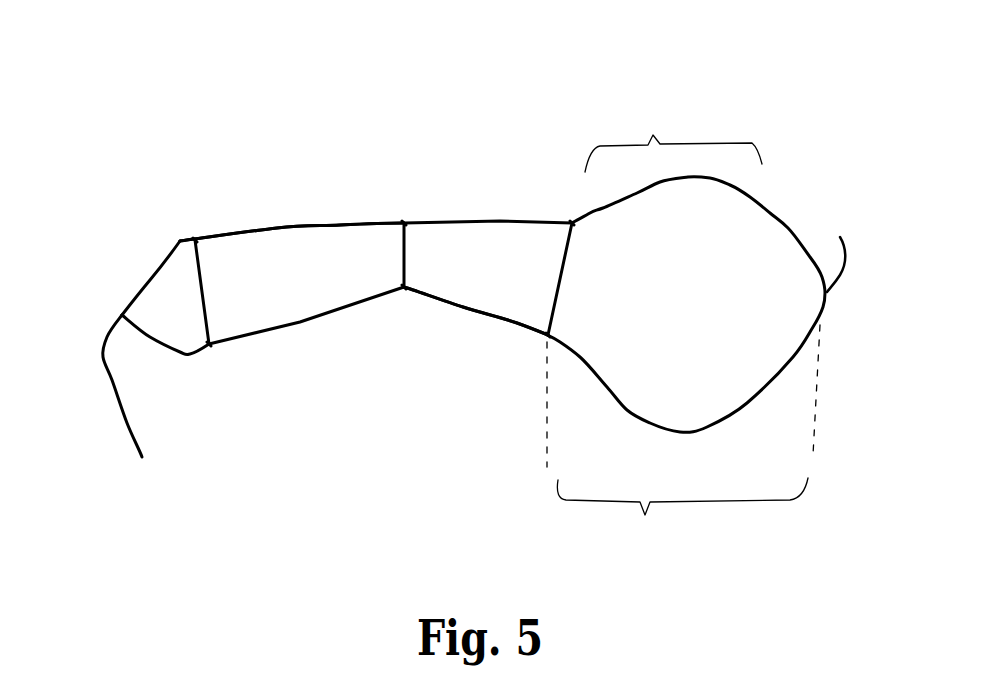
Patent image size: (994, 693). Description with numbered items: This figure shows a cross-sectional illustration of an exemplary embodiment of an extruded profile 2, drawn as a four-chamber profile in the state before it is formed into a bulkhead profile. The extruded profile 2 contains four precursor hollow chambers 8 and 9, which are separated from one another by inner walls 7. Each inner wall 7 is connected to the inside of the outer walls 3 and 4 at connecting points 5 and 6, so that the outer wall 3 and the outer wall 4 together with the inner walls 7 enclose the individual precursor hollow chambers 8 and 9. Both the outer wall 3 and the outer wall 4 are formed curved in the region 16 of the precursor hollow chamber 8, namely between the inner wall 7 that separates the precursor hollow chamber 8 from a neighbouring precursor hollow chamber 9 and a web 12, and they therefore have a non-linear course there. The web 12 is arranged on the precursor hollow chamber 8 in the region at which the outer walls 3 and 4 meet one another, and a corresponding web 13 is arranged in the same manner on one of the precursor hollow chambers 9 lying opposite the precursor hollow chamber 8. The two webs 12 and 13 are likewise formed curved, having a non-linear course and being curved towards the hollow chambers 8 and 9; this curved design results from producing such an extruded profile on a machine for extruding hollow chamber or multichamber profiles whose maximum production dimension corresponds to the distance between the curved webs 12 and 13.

The extruded profile 2 is at (395, 50).
The outer wall 3 is at (277, 228).
The outer wall 4 is at (488, 317).
The connecting point 5 is at (198, 243).
The connecting point 6 is at (212, 340).
The inner wall 7 is at (207, 290).
The precursor hollow chamber 8 is at (770, 250).
The precursor hollow chamber 9 is at (160, 295).
The web 12 is at (848, 262).
The web 13 is at (112, 385).
The region 16 is at (683, 330).